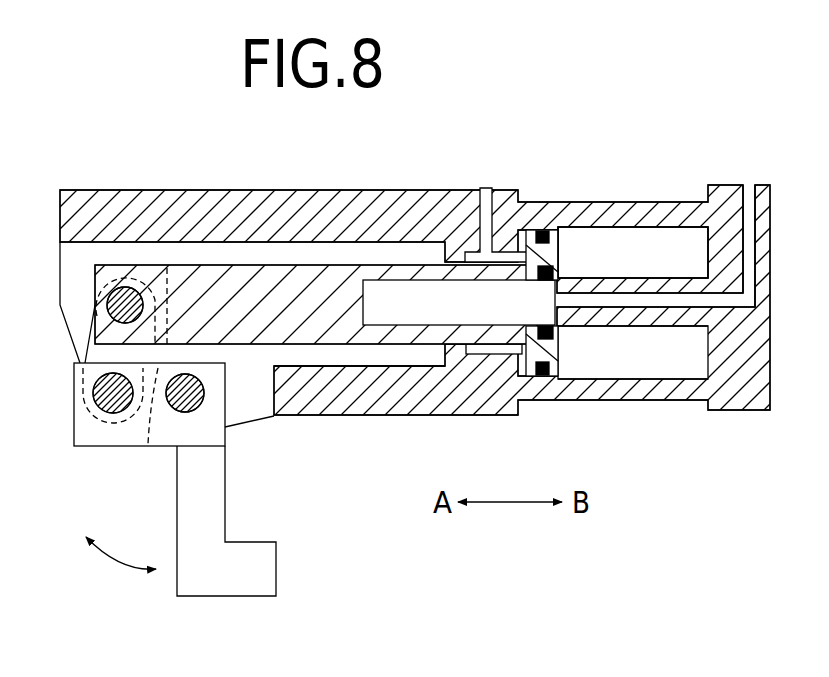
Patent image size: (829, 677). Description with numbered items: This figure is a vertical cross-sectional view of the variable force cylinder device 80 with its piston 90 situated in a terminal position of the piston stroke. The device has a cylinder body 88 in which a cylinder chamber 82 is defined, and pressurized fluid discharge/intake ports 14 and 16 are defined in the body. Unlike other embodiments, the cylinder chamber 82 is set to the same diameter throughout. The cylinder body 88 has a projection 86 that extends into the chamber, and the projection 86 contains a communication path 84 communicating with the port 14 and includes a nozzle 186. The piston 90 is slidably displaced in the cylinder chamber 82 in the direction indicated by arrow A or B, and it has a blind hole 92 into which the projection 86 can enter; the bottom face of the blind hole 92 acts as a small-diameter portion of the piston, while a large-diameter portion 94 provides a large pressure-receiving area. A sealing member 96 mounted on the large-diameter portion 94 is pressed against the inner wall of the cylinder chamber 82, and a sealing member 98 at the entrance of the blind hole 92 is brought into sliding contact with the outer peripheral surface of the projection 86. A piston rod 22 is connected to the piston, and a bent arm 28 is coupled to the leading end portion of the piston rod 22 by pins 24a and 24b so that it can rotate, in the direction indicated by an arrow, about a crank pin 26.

The pressurized fluid discharge/intake port 14 is at (746, 187).
The pressurized fluid discharge/intake port 16 is at (482, 187).
The piston rod 22 is at (310, 335).
The pin 24a is at (121, 303).
The pin 24b is at (112, 400).
The crank pin 26 is at (176, 412).
The bent arm 28 is at (208, 513).
The variable force cylinder device 80 is at (661, 126).
The cylinder chamber 82 is at (588, 237).
The communication path 84 is at (657, 300).
The projection 86 is at (583, 326).
The cylinder body 88 is at (369, 183).
The piston 90 is at (402, 348).
The blind hole 92 is at (413, 330).
The large-diameter portion 94 is at (554, 374).
The sealing member 96 is at (543, 230).
The sealing member 98 is at (557, 271).
The nozzle 186 is at (617, 326).